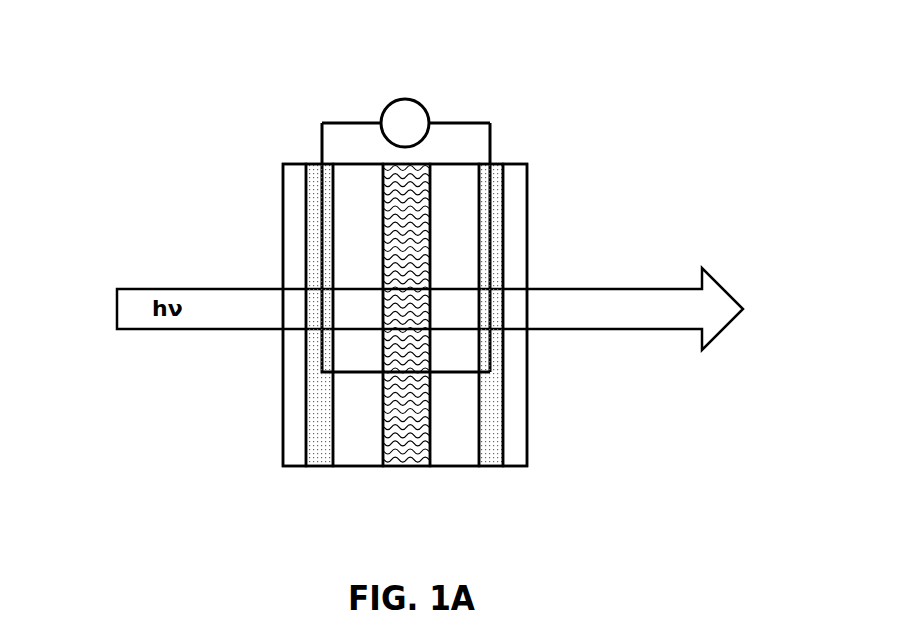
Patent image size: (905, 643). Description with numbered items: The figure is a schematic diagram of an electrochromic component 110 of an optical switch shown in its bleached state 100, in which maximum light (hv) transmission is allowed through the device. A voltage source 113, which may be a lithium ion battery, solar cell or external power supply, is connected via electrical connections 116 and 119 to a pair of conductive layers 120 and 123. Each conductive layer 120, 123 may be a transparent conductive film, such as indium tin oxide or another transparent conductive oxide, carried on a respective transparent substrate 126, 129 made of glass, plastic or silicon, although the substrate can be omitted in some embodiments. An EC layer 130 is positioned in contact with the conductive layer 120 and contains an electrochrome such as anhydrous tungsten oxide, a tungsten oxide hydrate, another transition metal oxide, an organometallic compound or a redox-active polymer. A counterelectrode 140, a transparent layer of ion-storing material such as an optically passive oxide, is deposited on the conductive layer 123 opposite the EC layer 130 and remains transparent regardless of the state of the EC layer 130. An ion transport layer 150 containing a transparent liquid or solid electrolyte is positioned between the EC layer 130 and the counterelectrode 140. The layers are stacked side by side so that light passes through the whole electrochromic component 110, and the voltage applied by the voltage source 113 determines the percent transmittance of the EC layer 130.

The bleached state 100 is at (182, 46).
The electrochromic component 110 is at (655, 192).
The voltage source 113 is at (438, 98).
The electrical connection 116 is at (320, 147).
The electrical connection 119 is at (490, 140).
The conductive layer 120 is at (312, 466).
The conductive layer 123 is at (495, 466).
The transparent substrate 126 is at (283, 426).
The transparent substrate 129 is at (527, 423).
The EC layer 130 is at (365, 466).
The counterelectrode 140 is at (447, 466).
The ion transport layer 150 is at (398, 466).